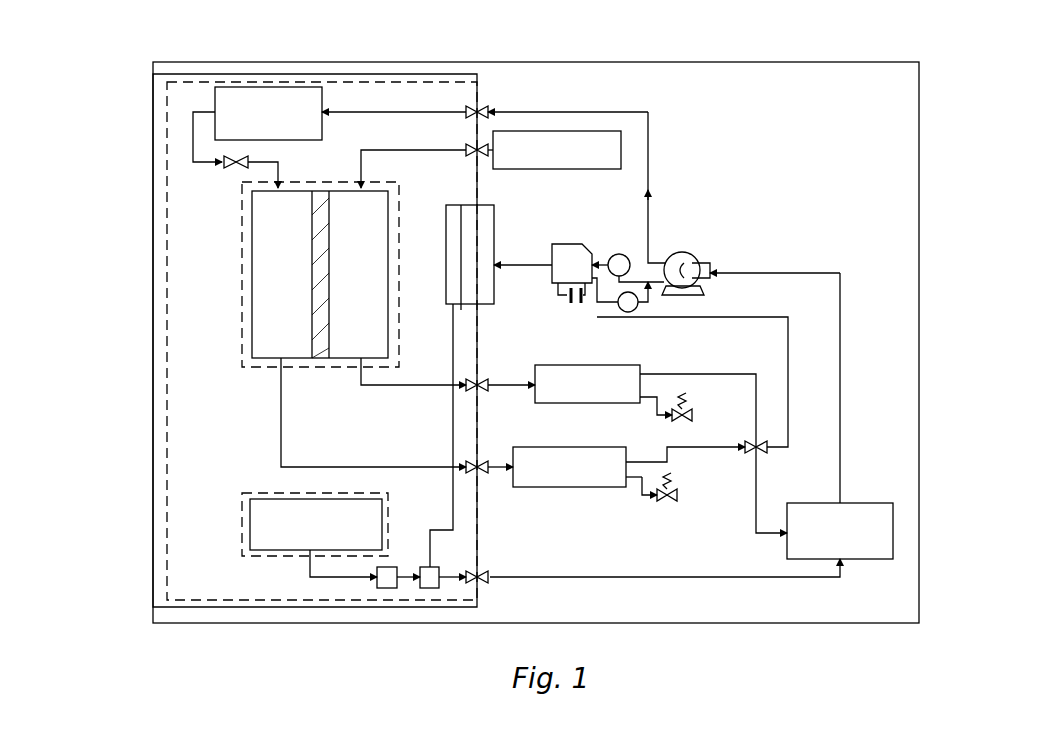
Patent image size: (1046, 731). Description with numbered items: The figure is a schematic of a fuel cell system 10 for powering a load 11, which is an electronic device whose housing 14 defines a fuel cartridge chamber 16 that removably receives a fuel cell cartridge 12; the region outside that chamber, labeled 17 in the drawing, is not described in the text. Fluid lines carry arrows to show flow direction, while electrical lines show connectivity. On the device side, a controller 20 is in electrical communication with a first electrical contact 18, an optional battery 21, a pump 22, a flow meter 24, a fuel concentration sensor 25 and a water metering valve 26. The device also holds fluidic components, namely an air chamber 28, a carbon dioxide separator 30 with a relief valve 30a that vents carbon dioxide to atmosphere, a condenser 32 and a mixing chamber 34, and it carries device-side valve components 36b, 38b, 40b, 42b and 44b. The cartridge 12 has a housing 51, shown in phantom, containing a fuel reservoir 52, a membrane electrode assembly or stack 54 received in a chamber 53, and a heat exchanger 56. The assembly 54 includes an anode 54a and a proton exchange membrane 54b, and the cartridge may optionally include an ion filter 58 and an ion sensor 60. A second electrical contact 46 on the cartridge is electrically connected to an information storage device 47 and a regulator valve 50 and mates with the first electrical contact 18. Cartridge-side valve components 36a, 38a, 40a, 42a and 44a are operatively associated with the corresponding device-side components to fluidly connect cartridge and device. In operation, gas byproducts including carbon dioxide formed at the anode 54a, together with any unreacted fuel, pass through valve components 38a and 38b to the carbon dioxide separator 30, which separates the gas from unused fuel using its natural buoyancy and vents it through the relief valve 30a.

The fuel cell system 10 is at (107, 82).
The load 11 is at (800, 62).
The fuel cell cartridge 12 is at (165, 340).
The housing 14 is at (145, 64).
The fuel cartridge chamber 16 is at (165, 548).
The external compartment 17 is at (869, 87).
The first electrical contact 18 is at (494, 225).
The controller 20 is at (572, 244).
The battery 21 is at (577, 303).
The pump 22 is at (684, 252).
The flow meter 24 is at (619, 254).
The fuel concentration sensor 25 is at (630, 312).
The water metering valve 26 is at (766, 440).
The air chamber 28 is at (605, 131).
The carbon dioxide separator 30 is at (578, 488).
The relief valve 30a is at (690, 420).
The condenser 32 is at (590, 403).
The mixing chamber 34 is at (815, 503).
The valve component 36a is at (474, 572).
The valve component 36b is at (486, 572).
The valve component 38a is at (466, 462).
The valve component 38b is at (486, 462).
The valve component 40a is at (466, 388).
The valve component 40b is at (486, 380).
The valve component 42a is at (466, 146).
The valve component 42b is at (488, 108).
The valve component 44a is at (466, 108).
The valve component 44b is at (478, 158).
The second electrical contact 46 is at (466, 308).
The information storage device 47 is at (448, 306).
The regulator valve 50 is at (235, 170).
The housing 51 is at (240, 500).
The fuel reservoir 52 is at (272, 550).
The chamber 53 is at (240, 250).
The membrane electrode assembly 54 is at (295, 308).
The anode 54a is at (252, 324).
The proton exchange membrane 54b is at (316, 360).
The heat exchanger 56 is at (322, 126).
The ion filter 58 is at (386, 588).
The ion sensor 60 is at (430, 588).